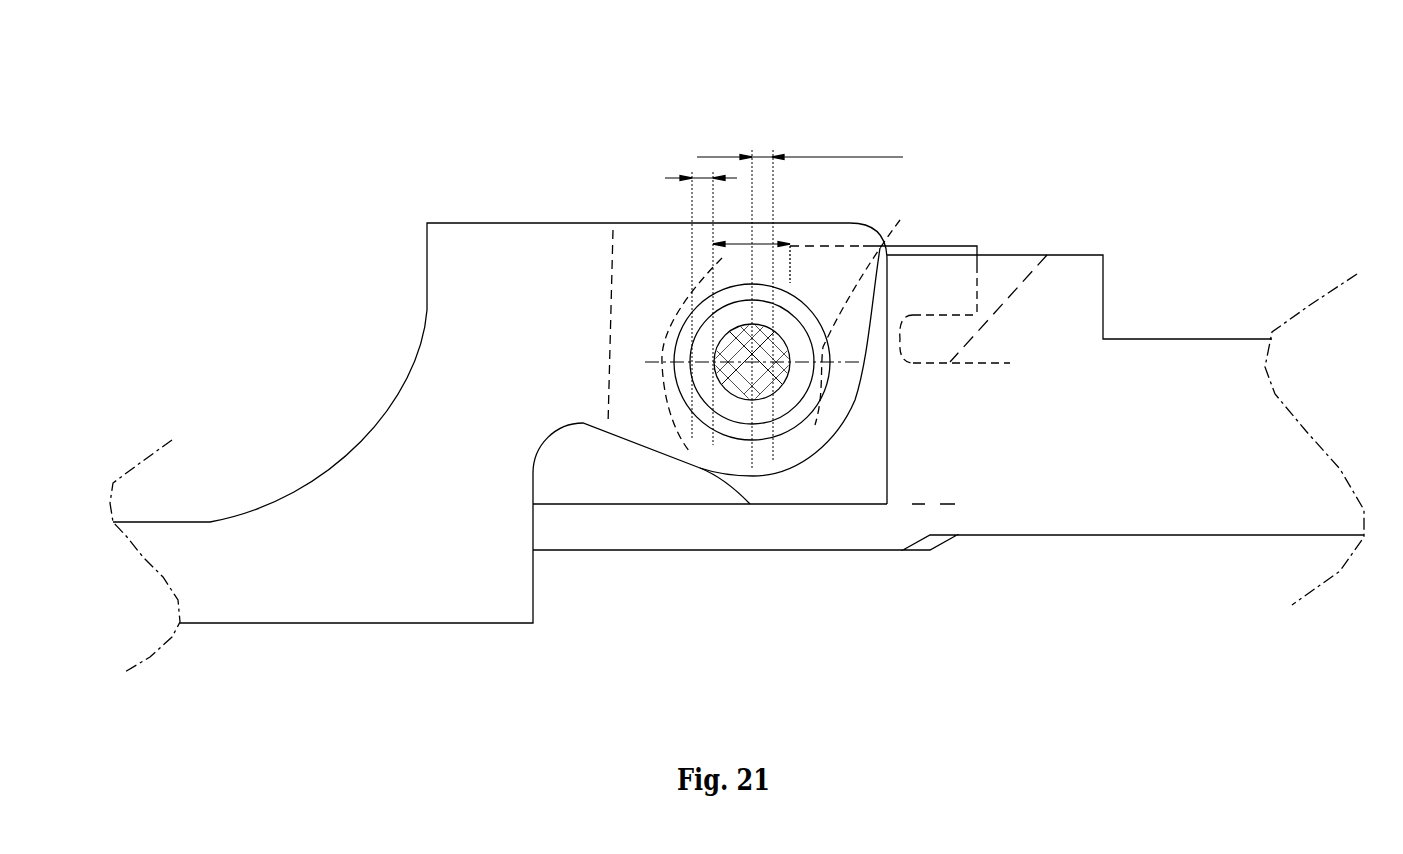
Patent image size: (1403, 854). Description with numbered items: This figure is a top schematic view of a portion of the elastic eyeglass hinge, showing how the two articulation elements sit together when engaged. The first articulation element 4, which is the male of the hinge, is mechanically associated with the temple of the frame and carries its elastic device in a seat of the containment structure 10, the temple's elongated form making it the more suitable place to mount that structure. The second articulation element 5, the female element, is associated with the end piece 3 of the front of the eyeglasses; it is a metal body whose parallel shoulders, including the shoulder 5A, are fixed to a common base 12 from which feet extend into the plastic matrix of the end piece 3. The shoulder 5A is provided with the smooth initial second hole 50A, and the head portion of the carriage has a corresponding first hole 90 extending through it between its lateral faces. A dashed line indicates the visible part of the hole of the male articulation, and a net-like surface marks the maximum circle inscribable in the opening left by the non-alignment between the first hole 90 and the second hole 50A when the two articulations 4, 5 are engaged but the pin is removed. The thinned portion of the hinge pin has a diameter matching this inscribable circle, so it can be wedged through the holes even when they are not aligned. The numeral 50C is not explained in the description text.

The end piece 3 is at (415, 608).
The first articulation element 4 is at (1193, 157).
The second articulation element 5 is at (550, 128).
The shoulder 5A is at (822, 238).
The containment structure 10 is at (1220, 515).
The common base 12 is at (647, 255).
The second hole 50A is at (712, 395).
The bolt shank 50C is at (776, 398).
The first hole 90 is at (883, 243).